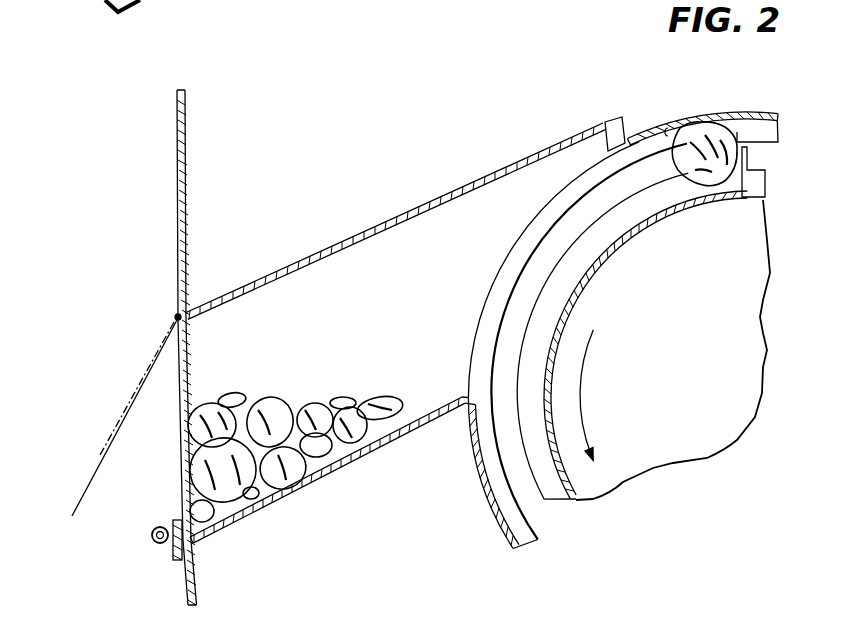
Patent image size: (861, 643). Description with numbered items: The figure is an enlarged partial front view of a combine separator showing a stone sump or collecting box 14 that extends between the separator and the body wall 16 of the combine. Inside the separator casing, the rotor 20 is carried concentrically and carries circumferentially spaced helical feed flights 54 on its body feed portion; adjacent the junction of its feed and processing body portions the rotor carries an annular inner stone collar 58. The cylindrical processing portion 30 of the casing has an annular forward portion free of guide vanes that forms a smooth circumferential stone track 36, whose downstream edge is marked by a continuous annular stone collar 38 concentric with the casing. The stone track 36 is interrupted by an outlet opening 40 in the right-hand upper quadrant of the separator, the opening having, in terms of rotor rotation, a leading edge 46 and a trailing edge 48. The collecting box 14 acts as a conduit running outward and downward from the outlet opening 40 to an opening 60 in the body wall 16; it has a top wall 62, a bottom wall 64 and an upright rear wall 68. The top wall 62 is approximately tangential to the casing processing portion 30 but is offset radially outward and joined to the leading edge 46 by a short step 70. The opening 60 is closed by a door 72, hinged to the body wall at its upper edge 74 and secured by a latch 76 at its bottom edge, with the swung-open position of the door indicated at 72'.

The stone sump or collecting box 14 is at (351, 208).
The body wall 16 is at (177, 140).
The rotor 20 is at (678, 470).
The cylindrical processing portion 30 is at (730, 112).
The stone track 36 is at (669, 128).
The stone collar 38 is at (768, 112).
The outlet opening 40 is at (497, 263).
The leading edge 46 is at (606, 124).
The trailing edge 48 is at (451, 394).
The helical feed flights 54 is at (745, 160).
The inner stone collar 58 is at (587, 257).
The opening 60 is at (187, 318).
The top wall 62 is at (298, 254).
The bottom wall 64 is at (330, 470).
The rear wall 68 is at (385, 303).
The step 70 is at (626, 128).
The door 72 is at (295, 470).
The door in open position 72' is at (117, 417).
The upper edge 74 is at (174, 317).
The latch 76 is at (152, 532).